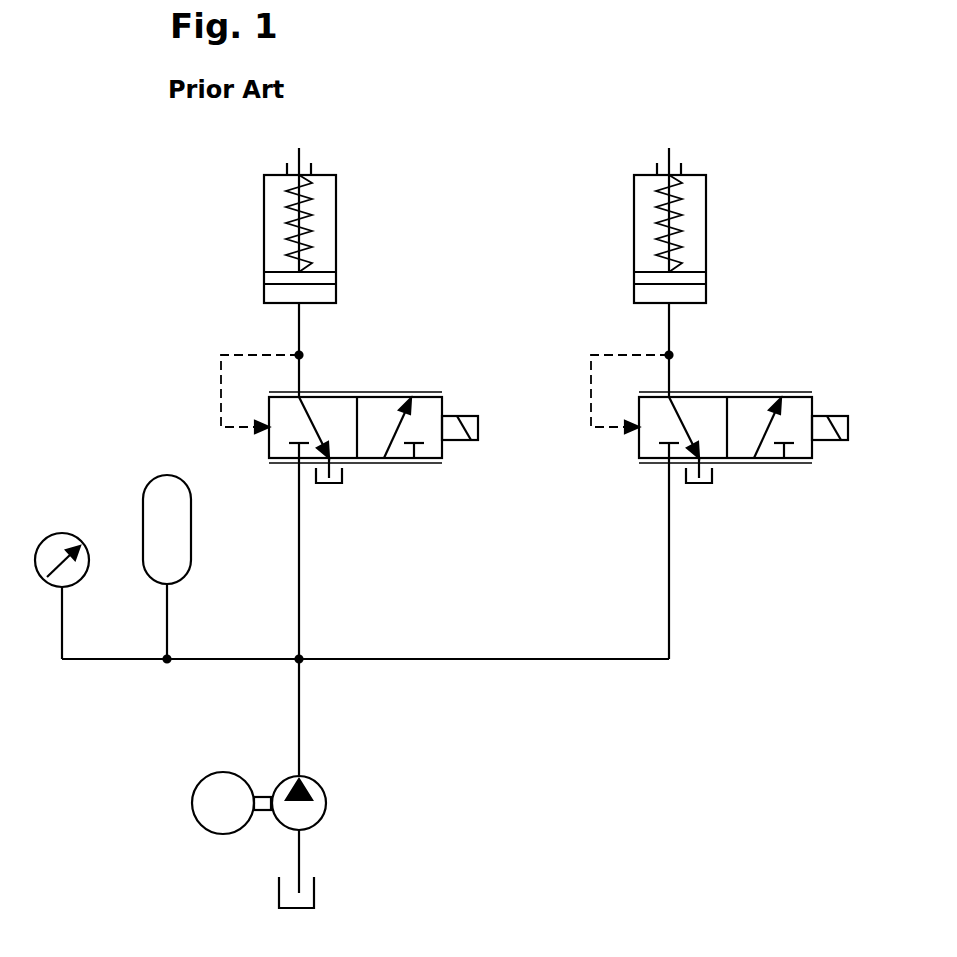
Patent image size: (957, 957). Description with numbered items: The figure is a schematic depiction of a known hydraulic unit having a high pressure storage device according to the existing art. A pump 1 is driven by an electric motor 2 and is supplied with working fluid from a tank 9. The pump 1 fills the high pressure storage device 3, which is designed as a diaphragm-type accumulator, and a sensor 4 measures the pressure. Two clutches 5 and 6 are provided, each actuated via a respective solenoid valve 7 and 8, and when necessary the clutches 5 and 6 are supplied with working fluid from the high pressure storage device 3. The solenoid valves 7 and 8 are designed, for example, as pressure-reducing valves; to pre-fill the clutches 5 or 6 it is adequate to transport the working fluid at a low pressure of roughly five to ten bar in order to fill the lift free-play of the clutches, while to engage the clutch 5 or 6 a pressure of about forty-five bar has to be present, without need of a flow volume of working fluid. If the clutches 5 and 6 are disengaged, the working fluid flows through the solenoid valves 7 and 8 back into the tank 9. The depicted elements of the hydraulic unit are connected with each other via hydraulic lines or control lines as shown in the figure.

The pump 1 is at (308, 812).
The electric motor 2 is at (203, 805).
The high pressure storage device 3 is at (178, 518).
The sensor 4 is at (52, 548).
The clutch 5 is at (648, 197).
The clutch 6 is at (322, 200).
The solenoid valve 7 is at (802, 445).
The solenoid valve 8 is at (432, 445).
The tank 9 is at (341, 485).